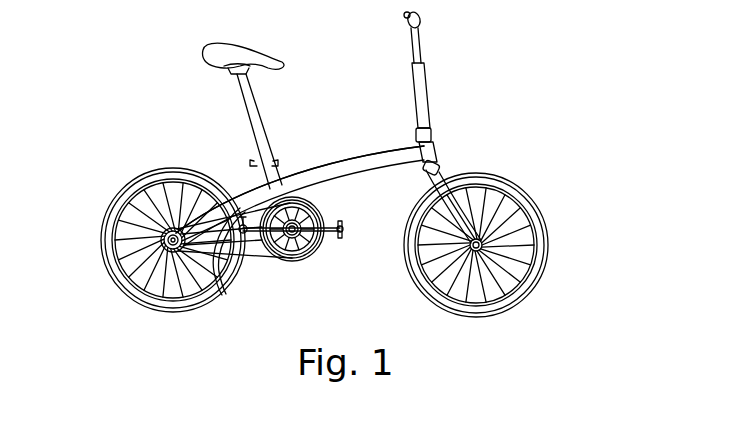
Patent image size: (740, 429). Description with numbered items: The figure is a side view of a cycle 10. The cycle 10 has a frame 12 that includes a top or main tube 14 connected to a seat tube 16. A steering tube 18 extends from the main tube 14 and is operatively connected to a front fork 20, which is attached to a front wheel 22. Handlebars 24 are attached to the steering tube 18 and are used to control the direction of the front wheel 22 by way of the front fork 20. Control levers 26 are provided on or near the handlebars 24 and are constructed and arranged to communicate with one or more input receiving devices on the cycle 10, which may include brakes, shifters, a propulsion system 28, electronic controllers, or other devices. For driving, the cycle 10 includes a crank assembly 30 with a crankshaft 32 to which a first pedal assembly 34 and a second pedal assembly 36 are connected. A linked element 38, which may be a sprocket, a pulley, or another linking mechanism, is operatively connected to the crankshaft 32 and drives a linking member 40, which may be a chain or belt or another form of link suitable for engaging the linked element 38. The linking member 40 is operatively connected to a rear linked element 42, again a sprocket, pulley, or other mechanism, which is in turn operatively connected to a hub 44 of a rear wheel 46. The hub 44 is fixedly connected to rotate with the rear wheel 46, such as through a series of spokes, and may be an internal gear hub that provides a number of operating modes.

The cycle 10 is at (486, 84).
The frame 12 is at (367, 153).
The main tube 14 is at (316, 163).
The seat tube 16 is at (255, 90).
The steering tube 18 is at (421, 92).
The front fork 20 is at (452, 174).
The front wheel 22 is at (546, 222).
The handlebars 24 is at (422, 18).
The control levers 26 is at (406, 16).
The propulsion system 28 is at (317, 203).
The crank assembly 30 is at (289, 245).
The crankshaft 32 is at (304, 229).
The first pedal assembly 34 is at (213, 270).
The second pedal assembly 36 is at (345, 225).
The linked element 38 is at (311, 260).
The linking member 40 is at (234, 262).
The rear linked element 42 is at (175, 230).
The hub 44 is at (166, 251).
The rear wheel 46 is at (112, 221).